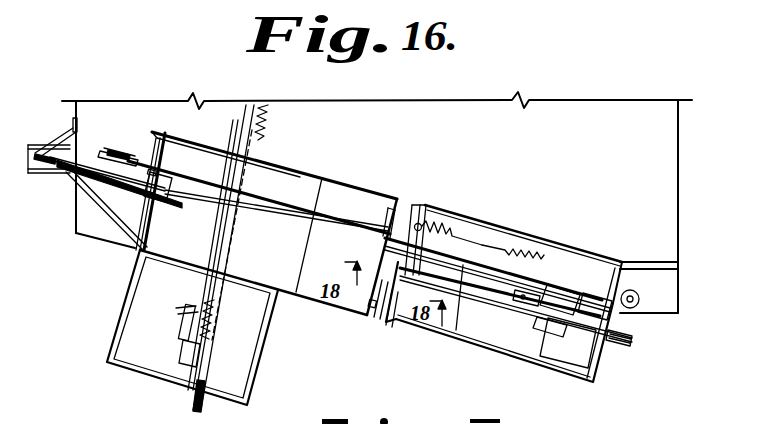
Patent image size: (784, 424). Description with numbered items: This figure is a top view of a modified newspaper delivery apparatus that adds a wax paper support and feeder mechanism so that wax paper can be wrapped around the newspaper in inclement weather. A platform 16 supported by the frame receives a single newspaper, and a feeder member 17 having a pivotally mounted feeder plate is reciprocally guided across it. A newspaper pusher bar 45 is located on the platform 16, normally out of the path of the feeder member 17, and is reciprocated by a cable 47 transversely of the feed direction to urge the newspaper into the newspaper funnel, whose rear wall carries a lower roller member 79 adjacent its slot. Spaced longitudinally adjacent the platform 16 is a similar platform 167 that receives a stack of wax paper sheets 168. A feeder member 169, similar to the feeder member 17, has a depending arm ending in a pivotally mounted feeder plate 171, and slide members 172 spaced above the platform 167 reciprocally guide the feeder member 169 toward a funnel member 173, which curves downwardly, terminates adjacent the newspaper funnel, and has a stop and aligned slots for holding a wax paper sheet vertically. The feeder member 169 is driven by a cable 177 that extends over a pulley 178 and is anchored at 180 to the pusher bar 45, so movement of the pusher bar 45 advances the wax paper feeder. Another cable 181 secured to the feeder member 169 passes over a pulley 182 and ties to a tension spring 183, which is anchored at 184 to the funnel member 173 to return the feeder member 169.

The platform 16 is at (296, 190).
The feeder member 17 is at (195, 323).
The newspaper pusher bar 45 is at (168, 136).
The cable 47 is at (262, 232).
The lower roller member 79 is at (373, 307).
The platform 167 is at (580, 380).
The wax paper sheets 168 is at (626, 347).
The feeder member 169 is at (560, 327).
The feeder plate 171 is at (585, 303).
The slide members 172 is at (515, 302).
The funnel member 173 is at (437, 327).
The cable 177 is at (142, 160).
The pulley 178 is at (130, 124).
The anchor point 180 is at (170, 170).
The cable 181 is at (580, 288).
The pulley 182 is at (640, 297).
The tension spring 183 is at (497, 245).
The anchor point 184 is at (430, 213).